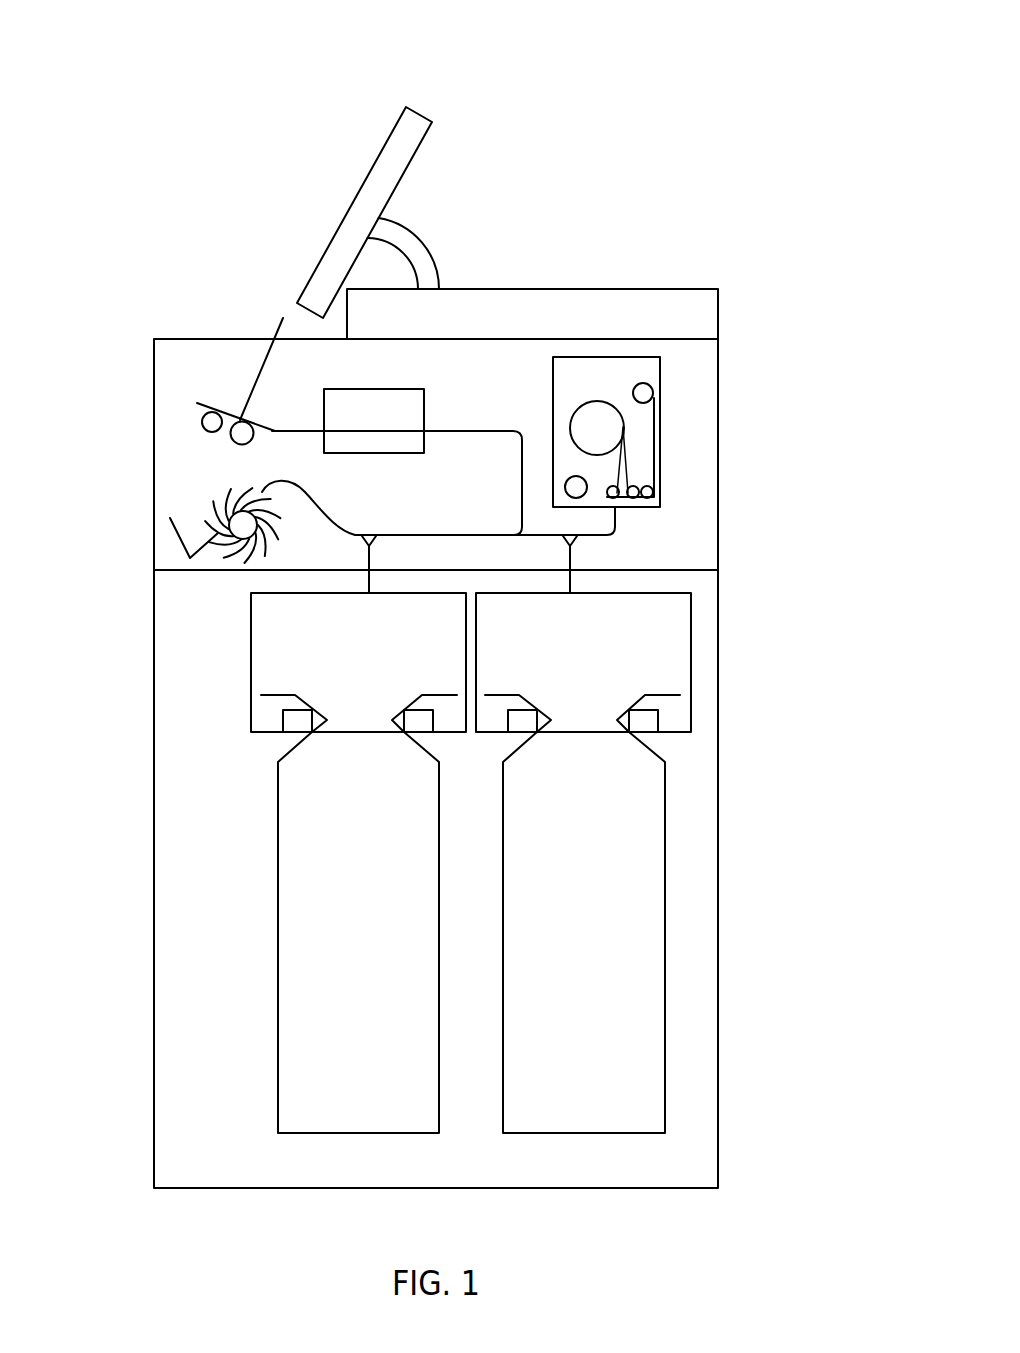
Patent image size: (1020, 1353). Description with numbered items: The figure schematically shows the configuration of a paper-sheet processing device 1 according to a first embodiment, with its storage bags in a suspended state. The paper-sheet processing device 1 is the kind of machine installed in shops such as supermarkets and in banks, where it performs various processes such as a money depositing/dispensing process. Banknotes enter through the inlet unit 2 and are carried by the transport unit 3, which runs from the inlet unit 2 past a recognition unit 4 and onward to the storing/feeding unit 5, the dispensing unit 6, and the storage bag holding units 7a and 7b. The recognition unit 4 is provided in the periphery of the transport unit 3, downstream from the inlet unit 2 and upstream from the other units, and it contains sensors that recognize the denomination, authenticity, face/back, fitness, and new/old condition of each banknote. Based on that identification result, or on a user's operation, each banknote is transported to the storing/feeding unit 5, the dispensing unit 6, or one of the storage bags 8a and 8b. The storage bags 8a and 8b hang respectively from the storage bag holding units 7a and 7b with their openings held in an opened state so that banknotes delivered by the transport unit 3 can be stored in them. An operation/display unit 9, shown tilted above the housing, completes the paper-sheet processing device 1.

The paper-sheet processing device 1 is at (439, 68).
The inlet unit 2 is at (217, 386).
The transport unit 3 is at (287, 428).
The recognition unit 4 is at (337, 388).
The storing/feeding unit 5 is at (612, 357).
The dispensing unit 6 is at (198, 518).
The storage bag holding unit 7a is at (282, 718).
The storage bag holding unit 7b is at (657, 720).
The storage bag 8a is at (276, 913).
The storage bag 8b is at (660, 890).
The operation/display unit 9 is at (352, 192).